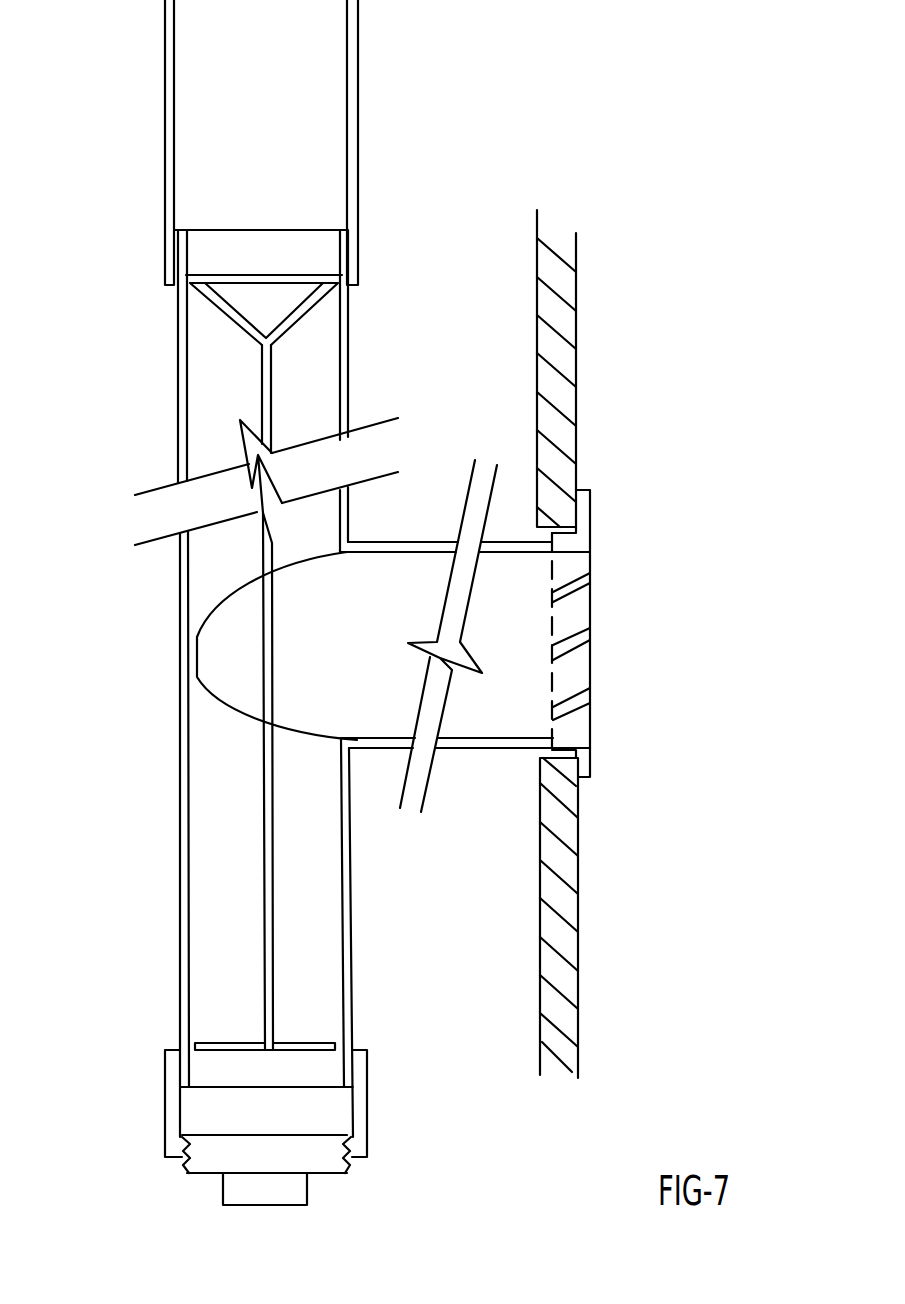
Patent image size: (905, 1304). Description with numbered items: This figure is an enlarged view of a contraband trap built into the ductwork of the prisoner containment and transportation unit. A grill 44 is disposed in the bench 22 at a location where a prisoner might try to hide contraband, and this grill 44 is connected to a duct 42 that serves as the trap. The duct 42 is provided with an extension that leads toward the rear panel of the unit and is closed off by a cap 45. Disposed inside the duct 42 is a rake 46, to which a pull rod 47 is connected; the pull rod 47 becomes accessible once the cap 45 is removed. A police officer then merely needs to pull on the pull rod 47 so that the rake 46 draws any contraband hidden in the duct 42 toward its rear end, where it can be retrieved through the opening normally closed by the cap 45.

The bench 22 is at (570, 405).
The duct 42 is at (350, 353).
The grill 44 is at (593, 617).
The cap 45 is at (322, 1152).
The rake 46 is at (240, 330).
The pull rod 47 is at (262, 900).